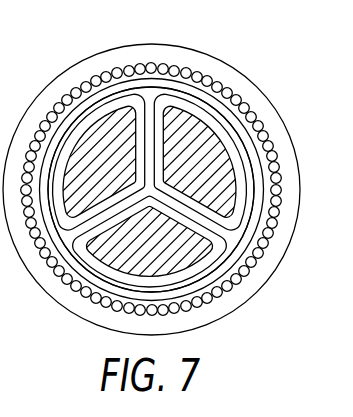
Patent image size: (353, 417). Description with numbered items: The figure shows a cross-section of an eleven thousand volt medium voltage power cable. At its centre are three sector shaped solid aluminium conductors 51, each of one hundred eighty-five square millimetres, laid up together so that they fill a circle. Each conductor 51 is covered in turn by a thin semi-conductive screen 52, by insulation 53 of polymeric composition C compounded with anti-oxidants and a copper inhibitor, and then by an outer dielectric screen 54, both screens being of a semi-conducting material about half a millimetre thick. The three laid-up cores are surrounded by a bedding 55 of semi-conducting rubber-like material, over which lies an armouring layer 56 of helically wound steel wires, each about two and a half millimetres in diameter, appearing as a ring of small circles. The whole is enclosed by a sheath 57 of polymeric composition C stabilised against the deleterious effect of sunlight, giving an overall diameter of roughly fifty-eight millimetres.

The sector shaped solid aluminium conductor 51 is at (184, 116).
The semi-conductive screen 52 is at (210, 108).
The insulation 53 is at (242, 160).
The dielectric screen 54 is at (255, 197).
The bedding 55 is at (245, 240).
The armouring layer 56 is at (253, 258).
The sheath 57 is at (253, 287).